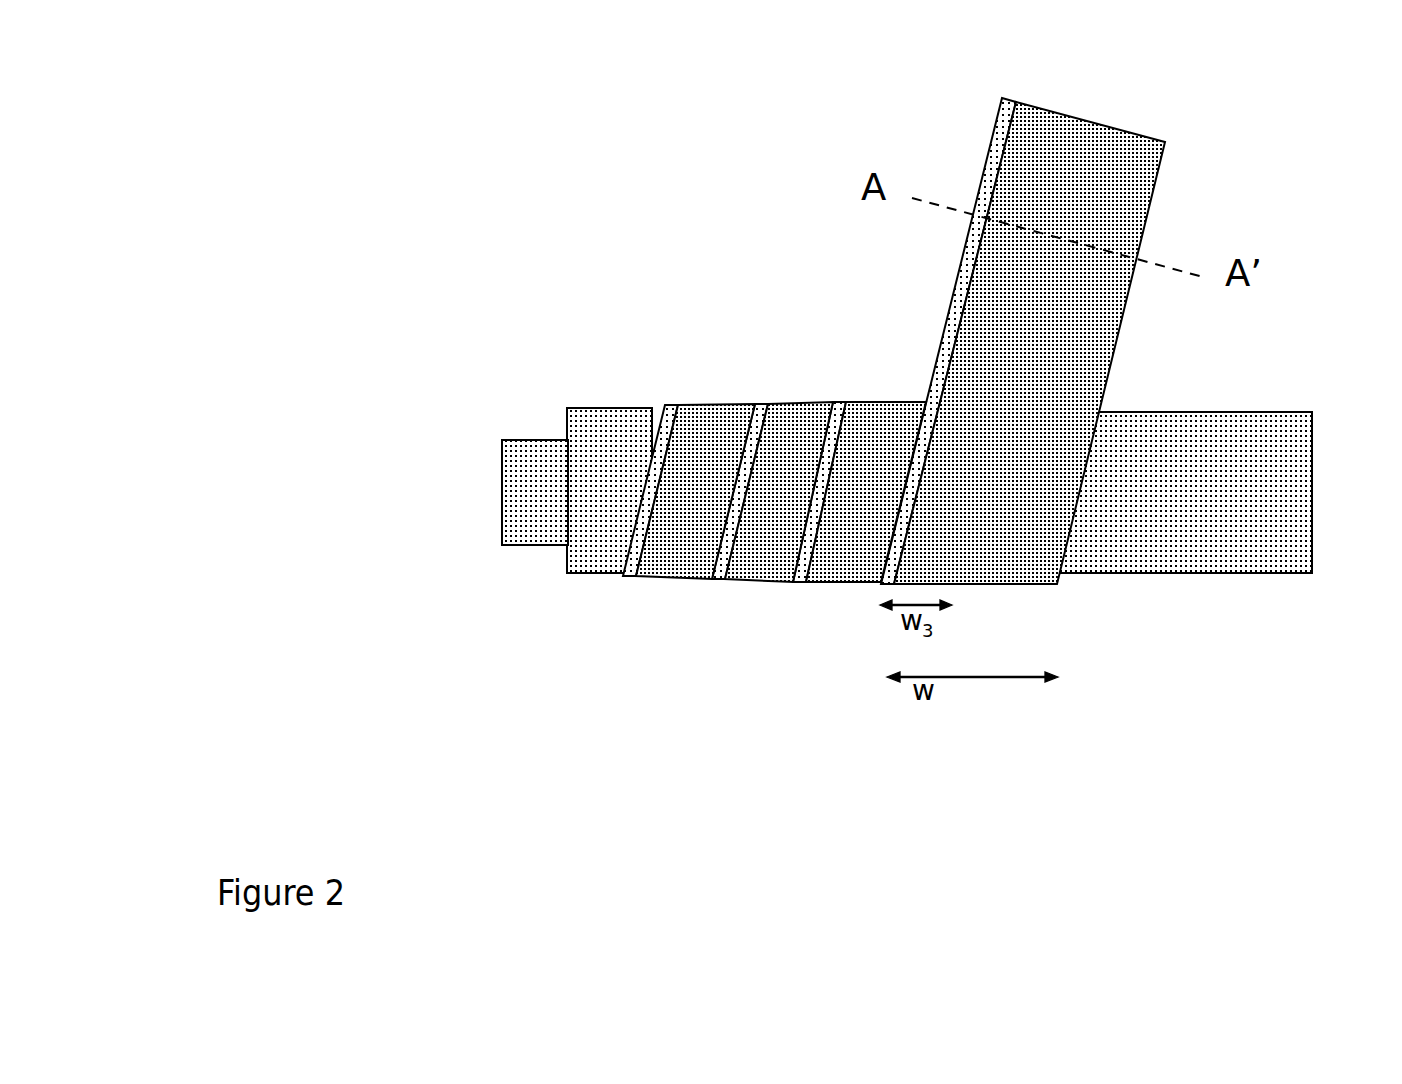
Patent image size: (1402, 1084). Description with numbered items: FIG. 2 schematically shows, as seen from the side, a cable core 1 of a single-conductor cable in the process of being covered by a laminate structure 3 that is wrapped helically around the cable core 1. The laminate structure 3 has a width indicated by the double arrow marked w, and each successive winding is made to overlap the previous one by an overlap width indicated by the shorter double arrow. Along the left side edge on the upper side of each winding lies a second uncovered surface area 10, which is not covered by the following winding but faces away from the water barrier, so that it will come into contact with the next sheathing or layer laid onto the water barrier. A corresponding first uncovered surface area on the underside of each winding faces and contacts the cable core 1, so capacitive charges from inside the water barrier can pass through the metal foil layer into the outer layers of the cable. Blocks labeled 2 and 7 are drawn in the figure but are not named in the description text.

The cable core 1 is at (535, 492).
The second layer 2 is at (939, 490).
The laminate structure 3 is at (1175, 196).
The segments 7 is at (833, 453).
The second uncovered surface area 10 is at (935, 368).